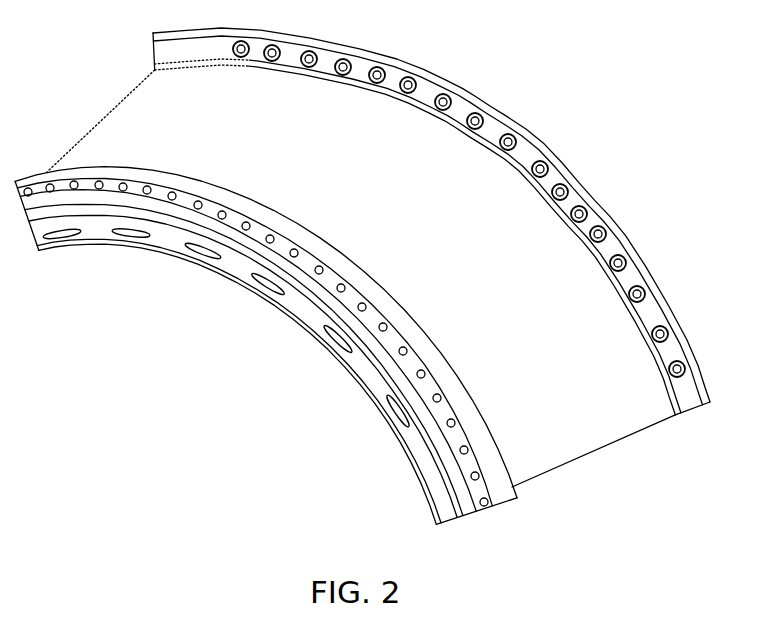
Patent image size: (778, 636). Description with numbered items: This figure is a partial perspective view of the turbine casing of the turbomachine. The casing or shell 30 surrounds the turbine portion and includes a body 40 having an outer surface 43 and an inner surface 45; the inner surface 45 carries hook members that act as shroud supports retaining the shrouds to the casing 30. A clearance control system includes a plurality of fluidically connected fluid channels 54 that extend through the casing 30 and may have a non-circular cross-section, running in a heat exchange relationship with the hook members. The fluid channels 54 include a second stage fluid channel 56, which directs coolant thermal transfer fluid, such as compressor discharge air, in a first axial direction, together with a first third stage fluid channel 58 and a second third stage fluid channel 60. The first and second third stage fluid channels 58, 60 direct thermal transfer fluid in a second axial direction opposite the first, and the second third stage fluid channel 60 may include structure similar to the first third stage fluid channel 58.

The casing 30 is at (667, 192).
The body 40 is at (420, 153).
The outer surface 43 is at (603, 395).
The inner surface 45 is at (150, 252).
The fluid channels 54 is at (265, 362).
The second stage fluid channel 56 is at (392, 423).
The first third stage fluid channel 58 is at (420, 457).
The second third stage fluid channel 60 is at (323, 351).